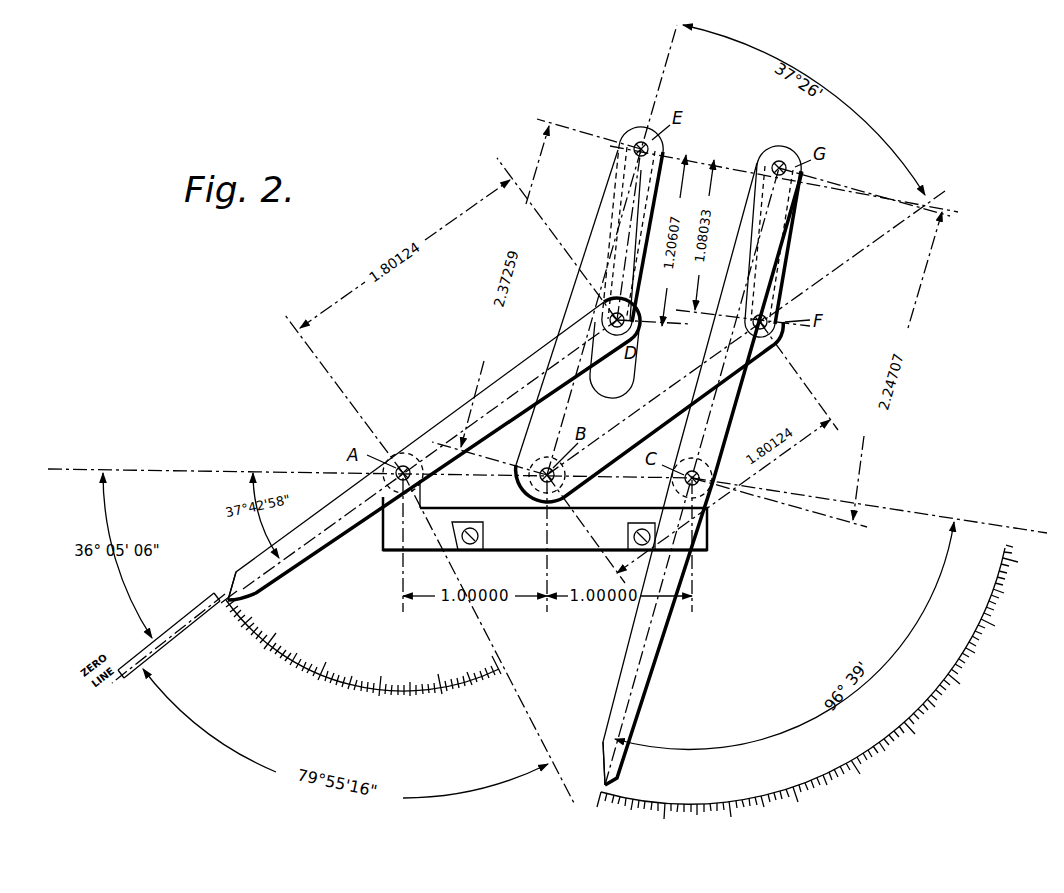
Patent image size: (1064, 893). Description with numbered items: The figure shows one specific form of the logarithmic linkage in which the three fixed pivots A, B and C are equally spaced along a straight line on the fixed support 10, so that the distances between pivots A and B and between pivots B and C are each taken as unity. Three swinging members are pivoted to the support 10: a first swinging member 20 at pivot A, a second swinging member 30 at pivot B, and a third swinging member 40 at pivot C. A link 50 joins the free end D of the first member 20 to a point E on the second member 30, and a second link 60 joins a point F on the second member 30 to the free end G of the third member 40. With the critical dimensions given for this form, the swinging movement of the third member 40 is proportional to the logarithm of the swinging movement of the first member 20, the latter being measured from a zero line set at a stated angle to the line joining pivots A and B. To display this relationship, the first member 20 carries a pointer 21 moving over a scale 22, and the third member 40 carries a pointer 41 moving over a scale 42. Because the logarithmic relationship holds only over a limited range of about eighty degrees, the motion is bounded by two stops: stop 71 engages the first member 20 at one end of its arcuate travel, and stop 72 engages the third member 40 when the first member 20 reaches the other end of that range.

The fixed support 10 is at (383, 545).
The first swinging member 20 is at (452, 412).
The pointer 21 is at (230, 602).
The scale 22 is at (387, 688).
The second swinging member 30 is at (513, 484).
The third swinging member 40 is at (732, 413).
The pointer 41 is at (612, 778).
The scale 42 is at (815, 768).
The link 50 is at (610, 218).
The link 60 is at (790, 262).
The stop 71 is at (483, 536).
The stop 72 is at (628, 522).